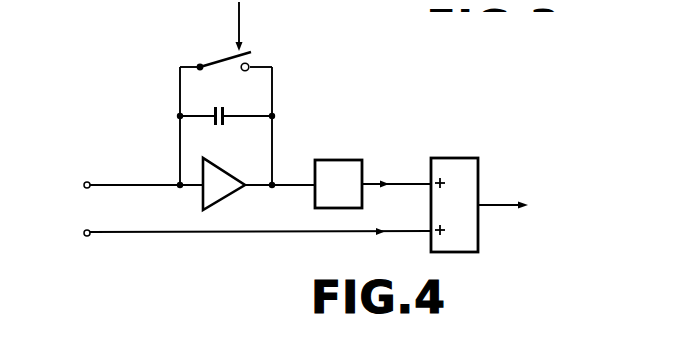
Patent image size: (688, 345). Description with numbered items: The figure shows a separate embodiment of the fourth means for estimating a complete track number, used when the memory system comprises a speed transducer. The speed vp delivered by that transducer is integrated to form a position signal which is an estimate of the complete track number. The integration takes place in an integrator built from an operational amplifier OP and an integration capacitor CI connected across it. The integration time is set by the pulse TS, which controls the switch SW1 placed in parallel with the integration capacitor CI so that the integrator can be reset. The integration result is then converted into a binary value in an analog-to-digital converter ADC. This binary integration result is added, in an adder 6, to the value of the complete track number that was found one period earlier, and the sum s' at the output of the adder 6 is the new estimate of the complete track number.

The pulse TS is at (252, 26).
The switch SW1 is at (216, 61).
The integration capacitor CI is at (228, 120).
The speed vp is at (126, 185).
The operational amplifier OP is at (224, 193).
The analog-to-digital converter ADC is at (338, 158).
The adder 6 is at (478, 183).
The estimated complete track number s' is at (511, 204).